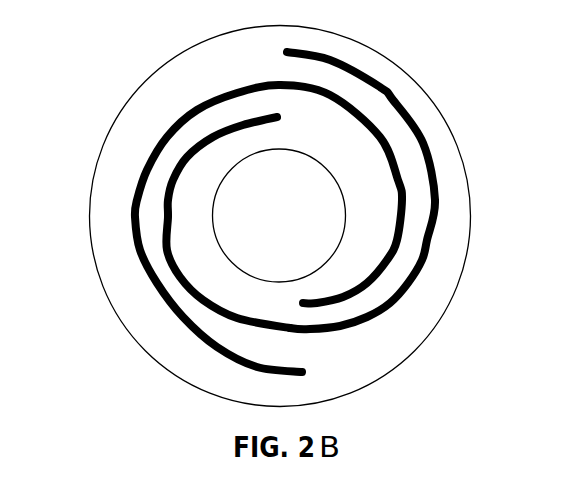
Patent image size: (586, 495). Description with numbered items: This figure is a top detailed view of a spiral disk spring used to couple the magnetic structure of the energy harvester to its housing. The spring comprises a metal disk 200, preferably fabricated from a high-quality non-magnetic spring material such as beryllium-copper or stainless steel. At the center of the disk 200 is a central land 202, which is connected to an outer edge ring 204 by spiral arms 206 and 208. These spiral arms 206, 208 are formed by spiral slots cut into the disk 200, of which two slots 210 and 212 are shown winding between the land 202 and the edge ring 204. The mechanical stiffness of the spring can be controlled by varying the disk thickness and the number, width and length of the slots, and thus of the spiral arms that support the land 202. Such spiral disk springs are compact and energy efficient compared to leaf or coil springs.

The metal disk 200 is at (125, 377).
The central land 202 is at (222, 163).
The edge ring 204 is at (100, 200).
The spiral arm 206 is at (162, 267).
The spiral arm 208 is at (415, 190).
The spiral slot 210 is at (160, 335).
The spiral slot 212 is at (368, 315).